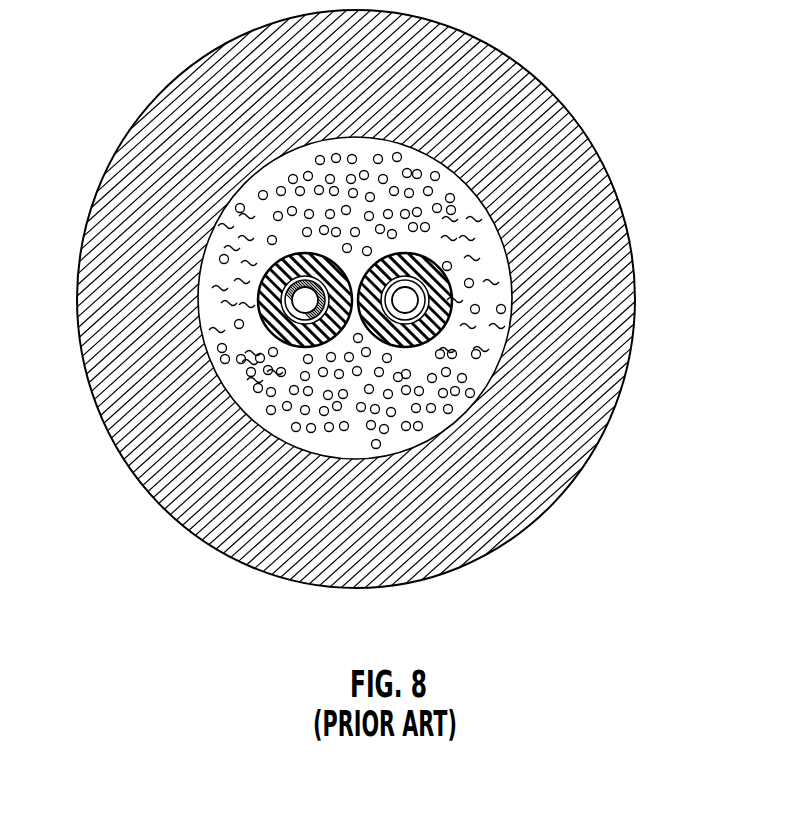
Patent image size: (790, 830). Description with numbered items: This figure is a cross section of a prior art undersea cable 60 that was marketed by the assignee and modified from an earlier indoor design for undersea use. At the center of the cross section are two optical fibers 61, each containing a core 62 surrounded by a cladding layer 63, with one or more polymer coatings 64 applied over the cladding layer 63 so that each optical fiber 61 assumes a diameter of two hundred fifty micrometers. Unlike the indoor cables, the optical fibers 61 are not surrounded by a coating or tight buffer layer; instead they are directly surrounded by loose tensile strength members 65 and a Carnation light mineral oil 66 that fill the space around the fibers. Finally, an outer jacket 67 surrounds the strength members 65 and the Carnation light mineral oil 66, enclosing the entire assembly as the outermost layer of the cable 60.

The undersea cable 60 is at (572, 75).
The optical fiber 61 is at (427, 253).
The core 62 is at (425, 290).
The cladding layer 63 is at (284, 294).
The polymer coating 64 is at (268, 323).
The tensile strength member 65 is at (476, 397).
The Carnation light mineral oil 66 is at (480, 328).
The outer jacket 67 is at (135, 142).